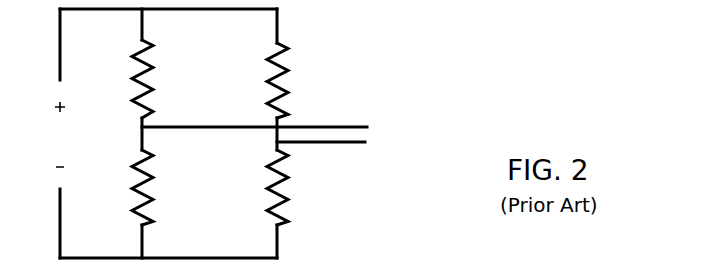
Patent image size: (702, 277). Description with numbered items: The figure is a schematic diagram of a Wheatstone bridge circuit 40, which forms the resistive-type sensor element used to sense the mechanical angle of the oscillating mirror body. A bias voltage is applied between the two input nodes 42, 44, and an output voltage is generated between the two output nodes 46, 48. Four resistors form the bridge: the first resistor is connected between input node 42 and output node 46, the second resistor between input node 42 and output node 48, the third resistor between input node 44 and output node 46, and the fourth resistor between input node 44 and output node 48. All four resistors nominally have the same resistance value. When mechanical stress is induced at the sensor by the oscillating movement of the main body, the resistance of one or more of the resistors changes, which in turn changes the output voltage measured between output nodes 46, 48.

The Wheatstone bridge circuit 40 is at (232, 133).
The input node 42 is at (225, 11).
The input node 44 is at (199, 255).
The output node 46 is at (193, 125).
The output node 48 is at (345, 144).